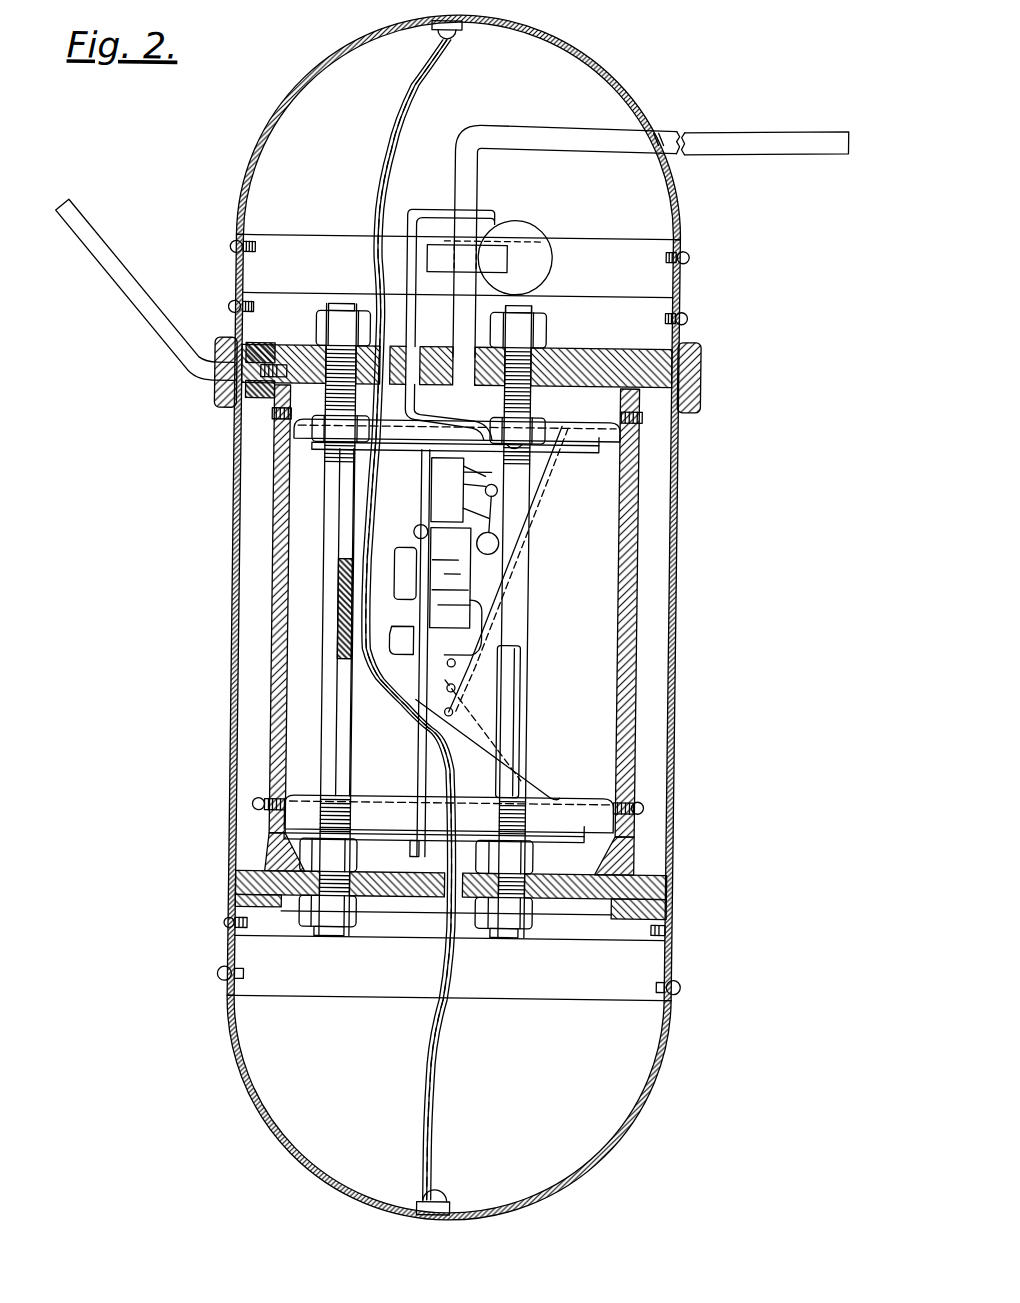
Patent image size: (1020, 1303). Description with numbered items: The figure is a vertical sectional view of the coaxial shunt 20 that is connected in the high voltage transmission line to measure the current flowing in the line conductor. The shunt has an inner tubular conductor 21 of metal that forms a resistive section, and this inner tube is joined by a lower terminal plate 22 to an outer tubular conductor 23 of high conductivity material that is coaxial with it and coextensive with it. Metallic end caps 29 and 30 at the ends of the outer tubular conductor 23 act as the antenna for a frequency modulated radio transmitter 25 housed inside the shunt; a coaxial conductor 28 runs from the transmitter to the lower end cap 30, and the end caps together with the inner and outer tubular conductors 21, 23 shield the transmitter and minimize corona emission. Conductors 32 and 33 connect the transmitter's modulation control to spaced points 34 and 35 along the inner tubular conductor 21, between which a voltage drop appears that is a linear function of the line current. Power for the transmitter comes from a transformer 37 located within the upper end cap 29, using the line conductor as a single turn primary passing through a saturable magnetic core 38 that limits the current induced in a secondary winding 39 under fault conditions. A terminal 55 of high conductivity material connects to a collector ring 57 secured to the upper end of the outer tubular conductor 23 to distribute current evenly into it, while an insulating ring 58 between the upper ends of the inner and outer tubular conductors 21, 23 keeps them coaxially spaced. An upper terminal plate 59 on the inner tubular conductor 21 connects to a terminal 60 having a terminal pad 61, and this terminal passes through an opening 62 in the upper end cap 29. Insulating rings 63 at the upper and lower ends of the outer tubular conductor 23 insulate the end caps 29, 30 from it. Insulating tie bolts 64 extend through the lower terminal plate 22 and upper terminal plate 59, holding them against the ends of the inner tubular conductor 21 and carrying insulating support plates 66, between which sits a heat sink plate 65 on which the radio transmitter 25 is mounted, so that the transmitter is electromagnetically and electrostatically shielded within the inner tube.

The coaxial shunt 20 is at (778, 315).
The inner tubular conductor 21 is at (619, 577).
The lower terminal plate 22 is at (549, 882).
The outer tubular conductor 23 is at (676, 574).
The frequency modulated radio transmitter 25 is at (426, 521).
The coaxial conductor 28 is at (459, 963).
The metallic end cap 29 is at (680, 190).
The metallic end cap 30 is at (668, 1057).
The conductor 32 is at (527, 520).
The conductor 33 is at (522, 769).
The spaced point 34 is at (276, 421).
The spaced point 35 is at (268, 804).
The transformer 37 is at (540, 212).
The saturable magnetic core 38 is at (423, 258).
The secondary winding 39 is at (537, 241).
The terminal 55 is at (108, 262).
The collector ring 57 is at (216, 340).
The insulating ring 58 is at (700, 376).
The upper terminal plate 59 is at (582, 347).
The terminal 60 is at (521, 127).
The terminal pad 61 is at (776, 127).
The opening 62 is at (662, 130).
The insulating rings 63 is at (681, 285).
The tie bolts 64 is at (523, 667).
The heat sink plate 65 is at (430, 739).
The insulating support plates 66 is at (579, 453).